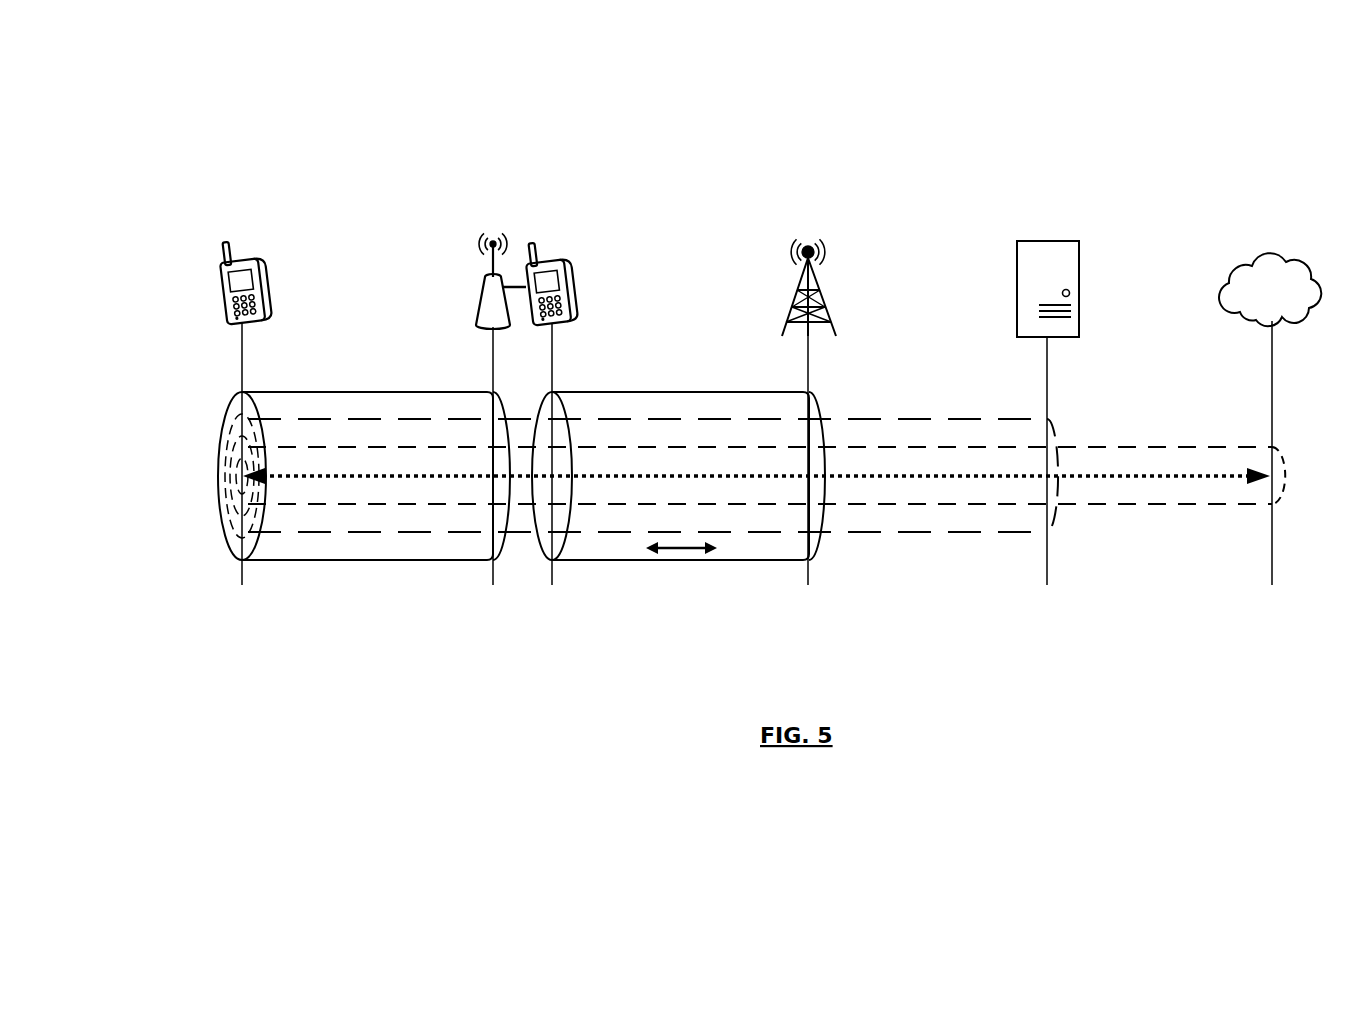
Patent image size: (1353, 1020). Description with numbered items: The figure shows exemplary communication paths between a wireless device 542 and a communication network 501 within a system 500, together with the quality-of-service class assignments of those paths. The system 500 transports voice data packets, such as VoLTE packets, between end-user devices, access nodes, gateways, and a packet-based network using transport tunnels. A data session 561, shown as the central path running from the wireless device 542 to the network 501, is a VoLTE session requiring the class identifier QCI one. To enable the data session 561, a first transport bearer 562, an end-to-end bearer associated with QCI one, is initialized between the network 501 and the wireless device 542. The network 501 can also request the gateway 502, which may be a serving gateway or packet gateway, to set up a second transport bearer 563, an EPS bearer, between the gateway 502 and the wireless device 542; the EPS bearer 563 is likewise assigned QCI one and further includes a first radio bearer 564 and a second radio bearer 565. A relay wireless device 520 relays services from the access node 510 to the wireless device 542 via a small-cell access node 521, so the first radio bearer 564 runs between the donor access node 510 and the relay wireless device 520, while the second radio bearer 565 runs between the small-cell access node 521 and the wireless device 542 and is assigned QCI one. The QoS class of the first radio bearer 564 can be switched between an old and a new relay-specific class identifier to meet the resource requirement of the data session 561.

The system 500 is at (924, 130).
The communication network 501 is at (1237, 272).
The gateway 502 is at (1017, 272).
The access node 510 is at (798, 290).
The relay wireless device 520 is at (563, 270).
The small-cell access node 521 is at (488, 277).
The wireless device 542 is at (218, 278).
The data session 561 is at (1233, 478).
The first transport bearer 562 is at (1175, 447).
The second transport bearer 563 is at (950, 419).
The first radio bearer 564 is at (710, 392).
The second radio bearer 565 is at (428, 392).